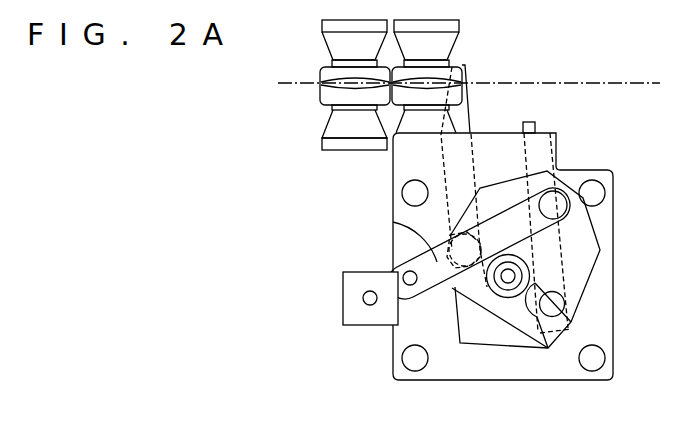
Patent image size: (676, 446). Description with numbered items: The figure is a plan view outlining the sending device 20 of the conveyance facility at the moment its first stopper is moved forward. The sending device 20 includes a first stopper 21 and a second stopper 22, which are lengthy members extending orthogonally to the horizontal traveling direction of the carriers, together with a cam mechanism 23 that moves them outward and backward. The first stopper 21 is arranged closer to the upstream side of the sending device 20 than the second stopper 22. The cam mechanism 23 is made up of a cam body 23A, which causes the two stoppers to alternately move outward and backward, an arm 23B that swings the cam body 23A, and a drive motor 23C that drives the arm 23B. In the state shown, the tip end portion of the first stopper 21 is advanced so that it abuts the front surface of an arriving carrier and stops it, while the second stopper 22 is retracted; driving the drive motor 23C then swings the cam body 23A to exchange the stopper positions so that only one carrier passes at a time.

The sending device 20 is at (398, 393).
The first stopper 21 is at (458, 121).
The second stopper 22 is at (535, 128).
The cam mechanism 23 is at (440, 299).
The cam body 23A is at (517, 315).
The arm 23B is at (452, 234).
The drive motor 23C is at (362, 325).